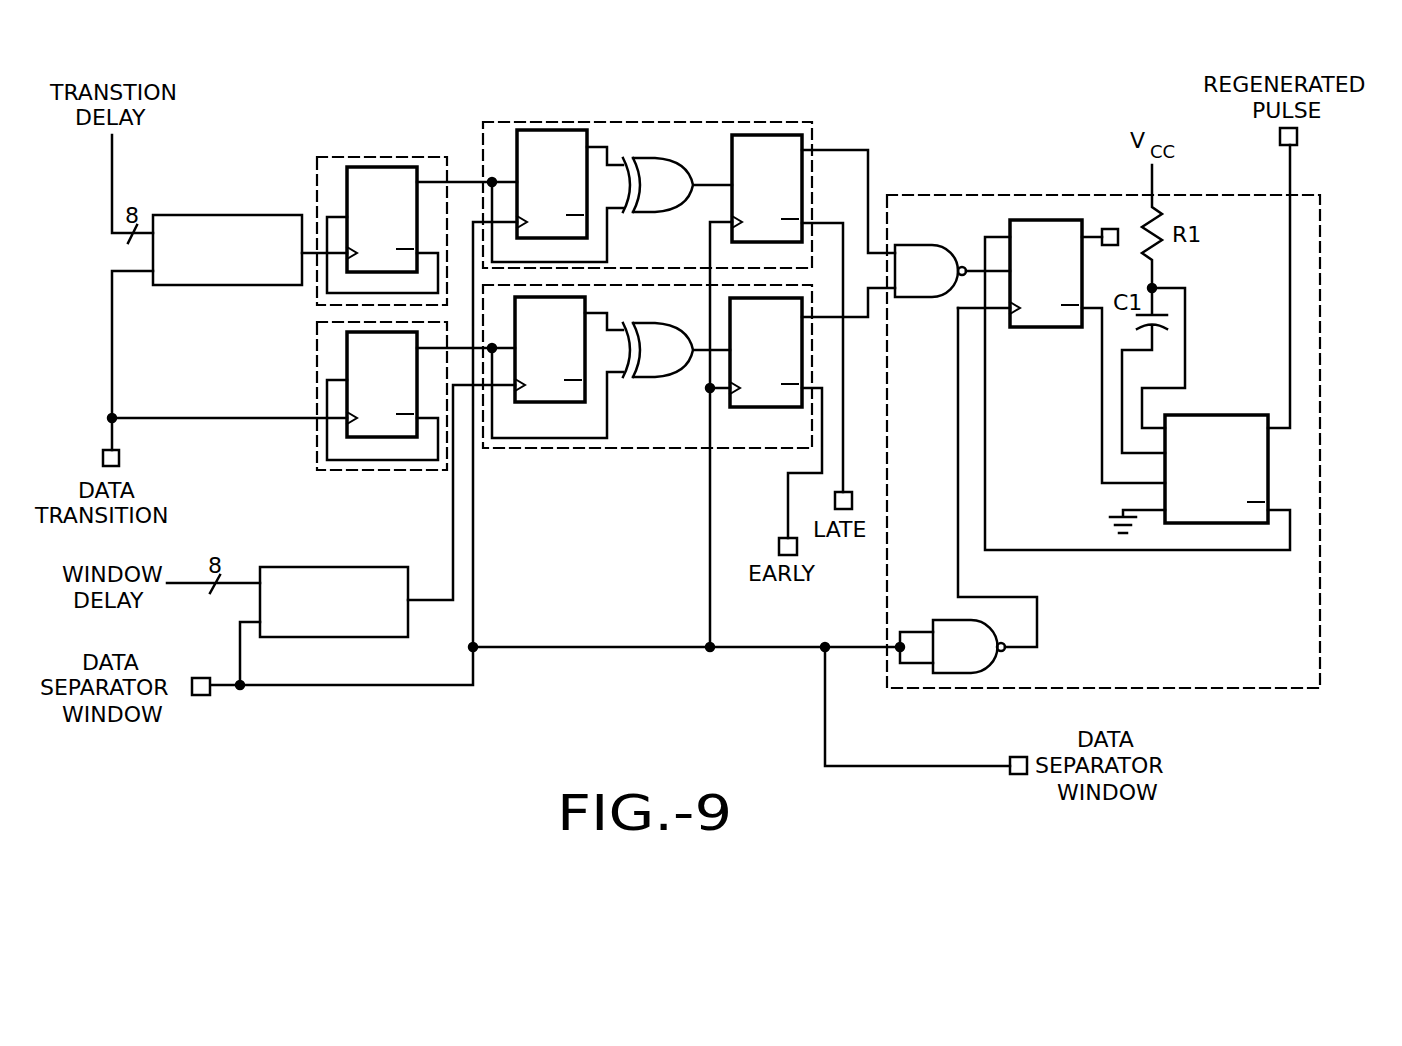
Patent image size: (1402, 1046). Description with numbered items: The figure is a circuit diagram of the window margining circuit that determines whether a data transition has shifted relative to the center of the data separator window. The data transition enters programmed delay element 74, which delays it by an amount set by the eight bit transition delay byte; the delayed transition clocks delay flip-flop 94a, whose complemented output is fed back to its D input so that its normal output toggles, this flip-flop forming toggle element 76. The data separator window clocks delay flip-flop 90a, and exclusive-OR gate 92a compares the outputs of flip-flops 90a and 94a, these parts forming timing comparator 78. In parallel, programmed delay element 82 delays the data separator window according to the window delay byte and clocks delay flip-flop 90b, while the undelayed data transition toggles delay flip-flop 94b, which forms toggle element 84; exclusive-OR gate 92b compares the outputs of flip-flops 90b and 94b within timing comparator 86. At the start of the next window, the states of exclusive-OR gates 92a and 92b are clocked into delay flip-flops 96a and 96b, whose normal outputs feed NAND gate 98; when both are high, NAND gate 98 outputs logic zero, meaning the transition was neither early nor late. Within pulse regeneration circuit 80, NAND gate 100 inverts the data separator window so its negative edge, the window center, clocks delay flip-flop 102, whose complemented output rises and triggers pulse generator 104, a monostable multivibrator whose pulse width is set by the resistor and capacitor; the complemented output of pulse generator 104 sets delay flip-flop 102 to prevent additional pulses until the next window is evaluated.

The programmed delay element 74 is at (258, 215).
The toggle element 76 is at (388, 155).
The timing comparator 78 is at (645, 122).
The pulse regeneration circuit 80 is at (920, 195).
The programmed delay element 82 is at (342, 567).
The toggle element 84 is at (398, 472).
The timing comparator 86 is at (670, 450).
The delay flip-flop 90a is at (548, 130).
The delay flip-flop 90b is at (560, 402).
The exclusive-OR gate 92a is at (653, 158).
The exclusive-OR gate 92b is at (642, 323).
The delay flip-flop 94a is at (347, 192).
The delay flip-flop 94b is at (347, 350).
The delay flip-flop 96a is at (762, 135).
The delay flip-flop 96b is at (775, 407).
The NAND gate 98 is at (915, 245).
The NAND gate 100 is at (970, 673).
The delay flip-flop 102 is at (1042, 220).
The pulse generator 104 is at (1217, 415).